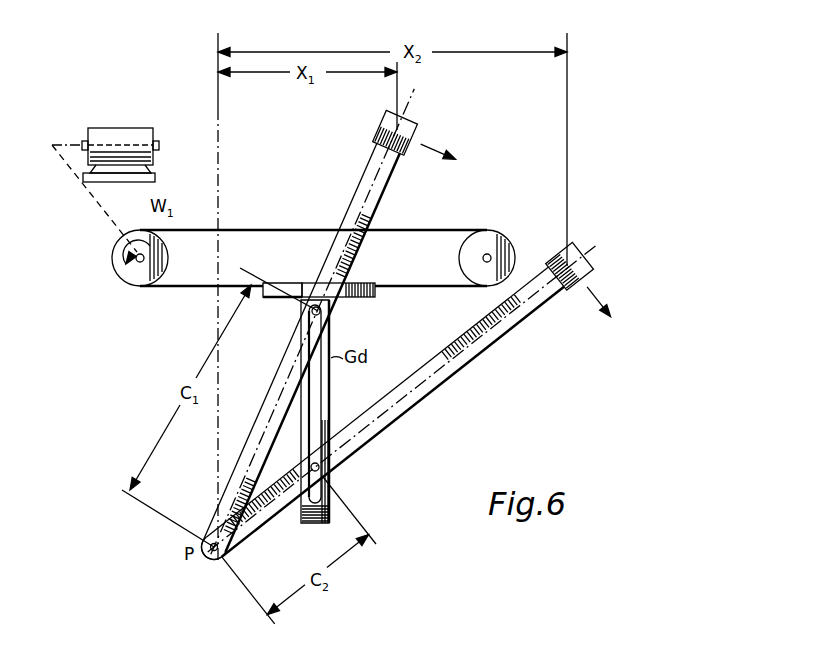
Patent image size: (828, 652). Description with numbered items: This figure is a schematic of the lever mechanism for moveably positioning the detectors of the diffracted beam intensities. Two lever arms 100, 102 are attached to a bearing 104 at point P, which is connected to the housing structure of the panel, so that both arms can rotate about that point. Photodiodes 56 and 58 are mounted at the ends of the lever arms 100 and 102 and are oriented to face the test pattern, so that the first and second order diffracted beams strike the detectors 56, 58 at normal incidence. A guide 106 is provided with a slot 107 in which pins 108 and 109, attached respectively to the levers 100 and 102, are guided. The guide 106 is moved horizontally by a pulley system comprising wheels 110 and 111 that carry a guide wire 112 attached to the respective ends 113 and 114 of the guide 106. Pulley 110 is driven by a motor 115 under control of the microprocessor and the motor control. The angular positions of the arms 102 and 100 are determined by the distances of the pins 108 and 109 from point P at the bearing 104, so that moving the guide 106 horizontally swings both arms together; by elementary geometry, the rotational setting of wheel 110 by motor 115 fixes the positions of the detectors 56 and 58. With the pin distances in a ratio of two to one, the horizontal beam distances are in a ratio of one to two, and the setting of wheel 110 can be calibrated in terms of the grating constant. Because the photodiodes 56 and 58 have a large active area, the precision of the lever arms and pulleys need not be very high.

The photodiode 56 is at (418, 122).
The photodiode 58 is at (582, 244).
The lever arm 100 is at (284, 379).
The lever arm 102 is at (446, 378).
The bearing 104 is at (213, 556).
The guide 106 is at (331, 334).
The slot 107 is at (320, 410).
The pin 108 is at (316, 305).
The pin 109 is at (322, 468).
The pulley wheel 110 is at (138, 287).
The pulley wheel 111 is at (497, 240).
The guide wire 112 is at (247, 229).
The end of guide 113 is at (378, 284).
The end of guide 114 is at (258, 283).
The motor 115 is at (135, 128).